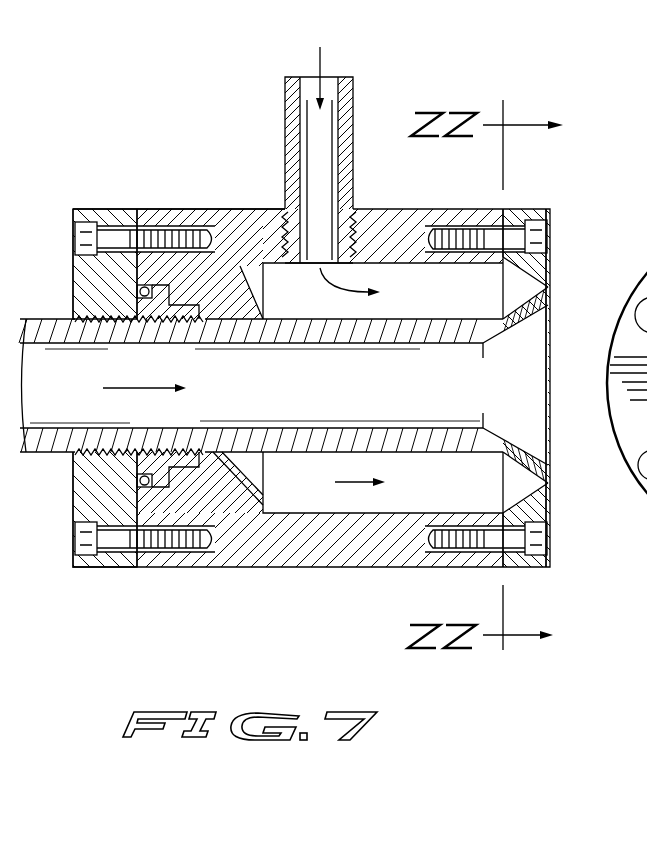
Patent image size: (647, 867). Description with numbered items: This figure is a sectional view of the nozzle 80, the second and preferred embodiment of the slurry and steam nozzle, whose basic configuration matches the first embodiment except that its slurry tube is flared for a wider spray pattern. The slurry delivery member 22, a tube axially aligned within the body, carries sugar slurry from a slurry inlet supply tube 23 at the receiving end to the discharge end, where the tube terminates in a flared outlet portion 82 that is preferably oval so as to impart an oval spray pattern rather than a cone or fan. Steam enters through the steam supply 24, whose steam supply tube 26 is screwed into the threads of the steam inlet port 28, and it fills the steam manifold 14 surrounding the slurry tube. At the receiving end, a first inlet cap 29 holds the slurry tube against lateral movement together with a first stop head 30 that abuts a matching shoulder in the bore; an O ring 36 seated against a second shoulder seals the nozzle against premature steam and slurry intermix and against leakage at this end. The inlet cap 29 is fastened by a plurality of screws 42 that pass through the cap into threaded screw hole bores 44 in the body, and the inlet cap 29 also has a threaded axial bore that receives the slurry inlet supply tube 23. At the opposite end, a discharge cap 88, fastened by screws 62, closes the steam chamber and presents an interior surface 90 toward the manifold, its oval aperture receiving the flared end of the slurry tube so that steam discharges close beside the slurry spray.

The steam manifold 14 is at (297, 496).
The slurry delivery member 22 is at (386, 313).
The slurry inlet supply tube 23 is at (42, 455).
The steam supply 24 is at (376, 104).
The steam supply tube 26 is at (355, 181).
The steam inlet port 28 is at (297, 248).
The first inlet cap 29 is at (100, 570).
The first stop head 30 is at (187, 475).
The O ring 36 is at (136, 290).
The screws 42 is at (72, 240).
The threaded screw hole bores 44 is at (176, 545).
The screws 62 is at (549, 236).
The nozzle 80 is at (158, 198).
The flared outlet portion 82 is at (549, 330).
The discharge cap 88 is at (532, 570).
The interior surface 90 is at (502, 478).